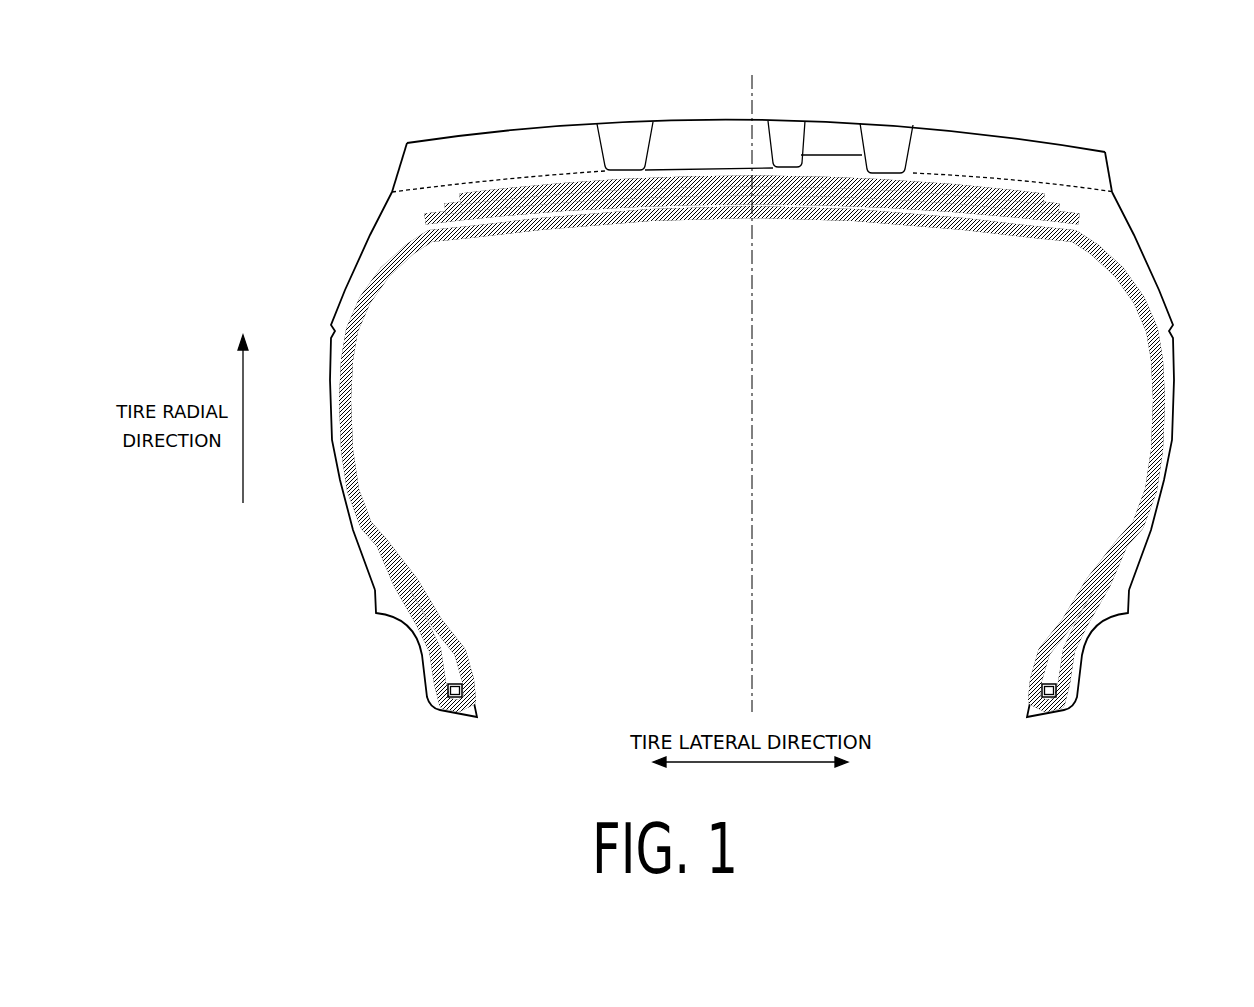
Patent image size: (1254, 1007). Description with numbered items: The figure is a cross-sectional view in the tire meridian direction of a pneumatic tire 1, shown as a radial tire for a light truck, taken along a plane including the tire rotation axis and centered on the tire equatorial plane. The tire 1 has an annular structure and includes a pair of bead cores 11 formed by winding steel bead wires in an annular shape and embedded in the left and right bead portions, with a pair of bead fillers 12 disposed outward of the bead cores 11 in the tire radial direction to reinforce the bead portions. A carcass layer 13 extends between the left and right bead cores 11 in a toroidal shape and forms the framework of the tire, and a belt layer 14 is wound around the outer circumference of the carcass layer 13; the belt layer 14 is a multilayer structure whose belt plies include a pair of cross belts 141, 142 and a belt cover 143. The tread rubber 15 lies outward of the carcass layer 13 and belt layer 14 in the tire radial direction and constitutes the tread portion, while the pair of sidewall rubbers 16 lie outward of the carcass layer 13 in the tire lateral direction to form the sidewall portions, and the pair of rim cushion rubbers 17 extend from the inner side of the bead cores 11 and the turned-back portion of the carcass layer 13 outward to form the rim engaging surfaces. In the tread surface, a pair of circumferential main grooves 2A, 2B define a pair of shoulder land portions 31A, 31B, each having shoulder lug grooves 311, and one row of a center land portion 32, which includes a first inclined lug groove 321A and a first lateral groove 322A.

The pneumatic tire 1 is at (751, 369).
The bead core 11 is at (457, 687).
The bead filler 12 is at (457, 660).
The carcass layer 13 is at (1097, 253).
The belt layer 14 is at (752, 255).
The cross belt 141 is at (967, 212).
The cross belt 142 is at (903, 204).
The belt cover 143 is at (990, 288).
The tread rubber 15 is at (1090, 163).
The sidewall rubber 16 is at (330, 383).
The rim cushion rubber 17 is at (420, 668).
The circumferential main groove 2A is at (612, 138).
The circumferential main groove 2B is at (882, 136).
The shoulder land portion 31A is at (473, 137).
The shoulder land portion 31B is at (995, 137).
The shoulder lug groove 311 is at (548, 145).
The center land portion 32 is at (717, 120).
The first inclined lug groove 321A is at (675, 128).
The first lateral groove 322A is at (782, 130).